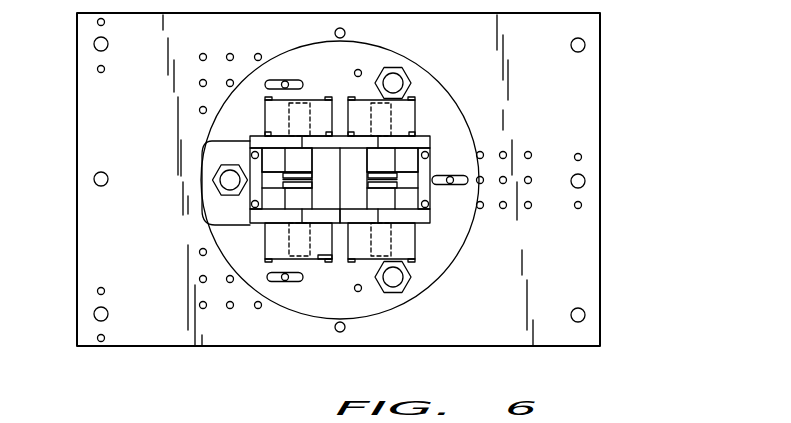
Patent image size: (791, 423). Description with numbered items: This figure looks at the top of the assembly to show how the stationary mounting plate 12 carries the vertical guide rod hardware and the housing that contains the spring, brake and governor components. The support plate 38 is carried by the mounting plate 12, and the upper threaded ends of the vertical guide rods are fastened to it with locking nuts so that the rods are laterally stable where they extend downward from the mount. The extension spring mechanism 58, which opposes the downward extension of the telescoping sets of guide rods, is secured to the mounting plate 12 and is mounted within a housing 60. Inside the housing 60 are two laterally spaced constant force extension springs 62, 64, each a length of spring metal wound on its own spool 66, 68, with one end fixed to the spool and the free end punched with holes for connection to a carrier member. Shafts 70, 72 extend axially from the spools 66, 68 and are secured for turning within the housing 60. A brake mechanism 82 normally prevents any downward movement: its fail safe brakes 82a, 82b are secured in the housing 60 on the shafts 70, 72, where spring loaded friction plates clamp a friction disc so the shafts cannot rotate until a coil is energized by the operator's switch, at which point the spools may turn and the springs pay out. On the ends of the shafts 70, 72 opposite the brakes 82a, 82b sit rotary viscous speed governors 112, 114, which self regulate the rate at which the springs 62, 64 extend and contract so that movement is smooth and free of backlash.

The mounting plate 12 is at (600, 86).
The support plate 38 is at (473, 220).
The extension spring mechanism 58 is at (453, 153).
The housing 60 is at (437, 93).
The constant force extension spring 62 is at (428, 217).
The constant force extension spring 64 is at (254, 215).
The spool 66 is at (408, 160).
The spool 68 is at (272, 160).
The shaft 70 is at (412, 124).
The shaft 72 is at (310, 108).
The brake mechanism 82 is at (320, 264).
The fail safe brake 82a is at (367, 100).
The fail safe brake 82b is at (272, 243).
The rotary viscous speed governor 112 is at (407, 253).
The rotary viscous speed governor 114 is at (273, 105).